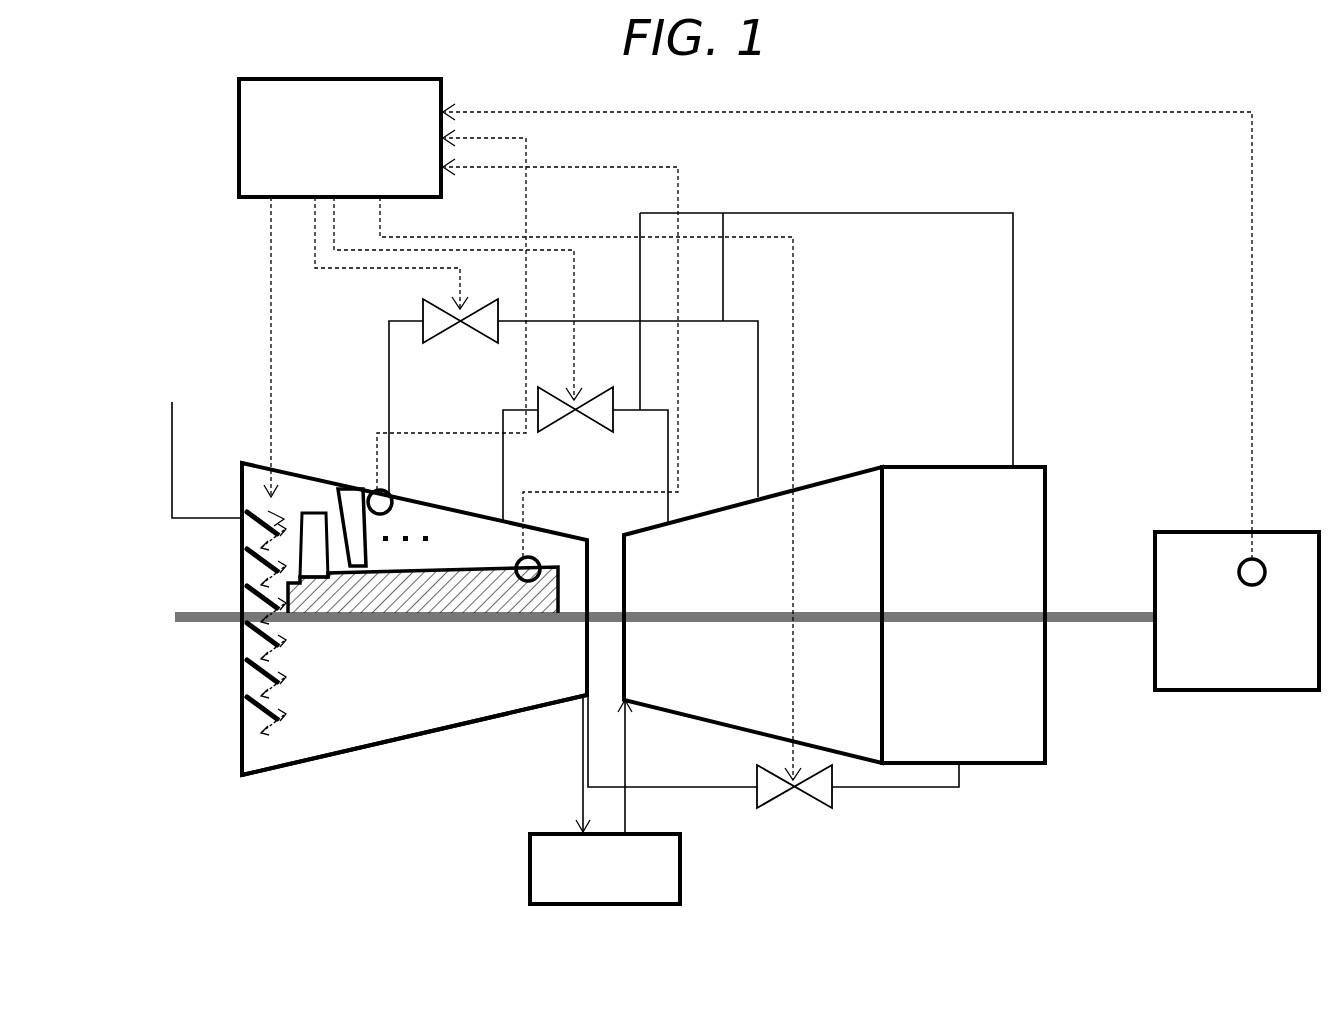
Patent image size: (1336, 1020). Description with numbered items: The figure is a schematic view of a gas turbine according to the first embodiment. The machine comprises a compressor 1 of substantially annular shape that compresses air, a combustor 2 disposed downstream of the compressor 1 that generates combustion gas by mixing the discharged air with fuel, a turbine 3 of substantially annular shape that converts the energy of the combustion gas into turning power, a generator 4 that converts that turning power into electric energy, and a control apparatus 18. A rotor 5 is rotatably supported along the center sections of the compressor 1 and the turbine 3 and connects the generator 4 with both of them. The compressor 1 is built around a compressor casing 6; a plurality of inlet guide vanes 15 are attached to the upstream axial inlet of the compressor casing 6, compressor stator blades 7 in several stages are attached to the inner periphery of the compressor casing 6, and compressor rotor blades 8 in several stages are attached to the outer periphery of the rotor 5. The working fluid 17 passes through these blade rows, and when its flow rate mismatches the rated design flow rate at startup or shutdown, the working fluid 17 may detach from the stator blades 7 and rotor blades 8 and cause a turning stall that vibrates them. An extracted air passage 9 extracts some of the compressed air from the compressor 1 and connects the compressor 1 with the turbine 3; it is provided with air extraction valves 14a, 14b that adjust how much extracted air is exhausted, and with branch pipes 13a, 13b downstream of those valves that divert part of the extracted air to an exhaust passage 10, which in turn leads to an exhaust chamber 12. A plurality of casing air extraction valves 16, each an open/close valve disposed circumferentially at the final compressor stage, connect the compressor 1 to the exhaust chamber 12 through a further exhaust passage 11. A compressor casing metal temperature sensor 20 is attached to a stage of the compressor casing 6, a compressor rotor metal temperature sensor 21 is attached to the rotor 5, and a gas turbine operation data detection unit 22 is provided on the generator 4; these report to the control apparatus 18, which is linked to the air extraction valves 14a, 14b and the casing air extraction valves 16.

The compressor 1 is at (307, 735).
The combustor 2 is at (597, 882).
The turbine 3 is at (757, 676).
The generator 4 is at (1174, 666).
The rotor 5 is at (190, 620).
The compressor casing 6 is at (402, 733).
The compressor stator blades 7 is at (350, 505).
The compressor rotor blades 8 is at (310, 550).
The extracted air passage 9 is at (541, 312).
The exhaust passage 10 is at (985, 204).
The exhaust passage 11 is at (916, 819).
The exhaust chamber 12 is at (912, 712).
The branch pipe 13a is at (723, 318).
The branch pipe 13b is at (642, 405).
The air extraction valve 14a is at (443, 367).
The air extraction valve 14b is at (597, 454).
The inlet guide vanes 15 is at (252, 525).
The casing air extraction valves 16 is at (780, 834).
The working fluid 17 is at (157, 391).
The control apparatus 18 is at (340, 288).
The compressor casing metal temperature sensor 20 is at (378, 490).
The compressor rotor metal temperature sensor 21 is at (518, 558).
The gas turbine operation data detection unit 22 is at (1238, 617).